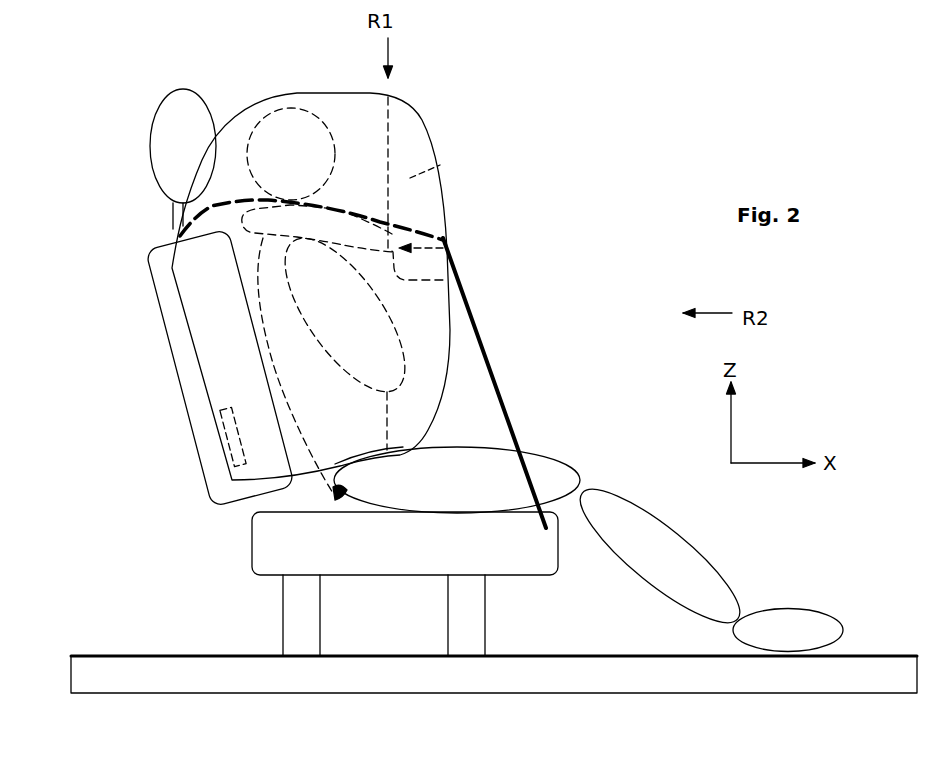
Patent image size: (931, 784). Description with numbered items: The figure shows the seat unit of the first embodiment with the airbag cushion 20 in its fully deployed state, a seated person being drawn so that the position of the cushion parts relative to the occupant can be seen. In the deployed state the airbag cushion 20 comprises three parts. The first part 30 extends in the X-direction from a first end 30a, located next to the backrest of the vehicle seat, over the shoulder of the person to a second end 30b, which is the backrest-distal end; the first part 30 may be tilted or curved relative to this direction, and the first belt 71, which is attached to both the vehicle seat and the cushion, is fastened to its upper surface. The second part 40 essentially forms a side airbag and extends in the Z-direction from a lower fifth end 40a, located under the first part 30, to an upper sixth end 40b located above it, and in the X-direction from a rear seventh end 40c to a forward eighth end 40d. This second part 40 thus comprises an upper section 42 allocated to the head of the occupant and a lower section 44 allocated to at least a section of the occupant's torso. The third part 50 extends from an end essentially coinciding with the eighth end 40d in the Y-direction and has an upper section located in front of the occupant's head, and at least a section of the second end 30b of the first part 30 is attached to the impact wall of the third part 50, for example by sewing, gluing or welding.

The airbag cushion 20 is at (400, 422).
The first part 30 is at (338, 232).
The first end 30a is at (240, 218).
The second end 30b is at (443, 248).
The second part 40 is at (353, 113).
The fifth end 40a is at (310, 479).
The sixth end 40b is at (297, 90).
The seventh end 40c is at (186, 320).
The eighth end 40d is at (455, 313).
The upper section 42 is at (355, 170).
The lower section 44 is at (310, 433).
The third part 50 is at (432, 167).
The first belt 71 is at (500, 402).